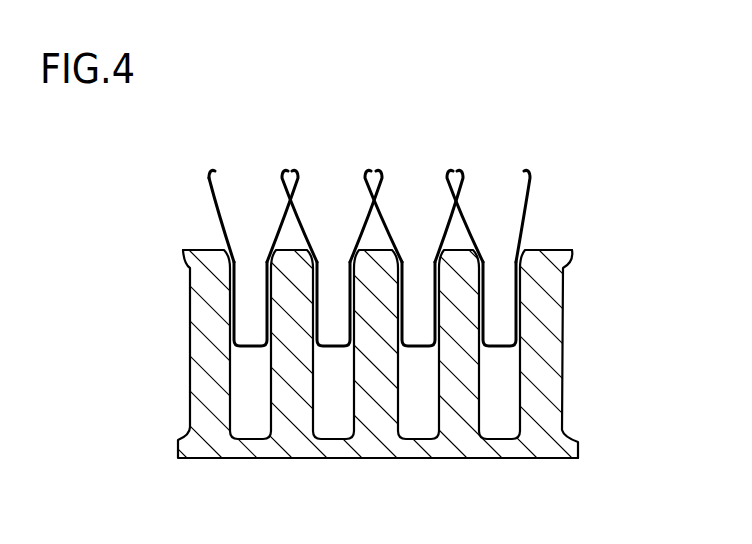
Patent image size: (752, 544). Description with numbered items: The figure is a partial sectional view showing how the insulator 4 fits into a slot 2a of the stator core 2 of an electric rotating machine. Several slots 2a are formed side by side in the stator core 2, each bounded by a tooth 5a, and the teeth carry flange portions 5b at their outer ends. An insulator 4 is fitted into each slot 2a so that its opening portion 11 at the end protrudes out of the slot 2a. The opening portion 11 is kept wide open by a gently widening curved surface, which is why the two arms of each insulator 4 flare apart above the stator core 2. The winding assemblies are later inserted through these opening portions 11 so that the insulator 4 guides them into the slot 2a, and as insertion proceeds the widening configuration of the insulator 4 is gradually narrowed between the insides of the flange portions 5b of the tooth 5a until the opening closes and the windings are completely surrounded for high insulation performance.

The stator core 2 is at (564, 400).
The slot 2a is at (508, 373).
The insulator 4 is at (209, 203).
The tooth 5a is at (550, 324).
The flange portion 5b is at (567, 250).
The opening portion 11 is at (247, 176).